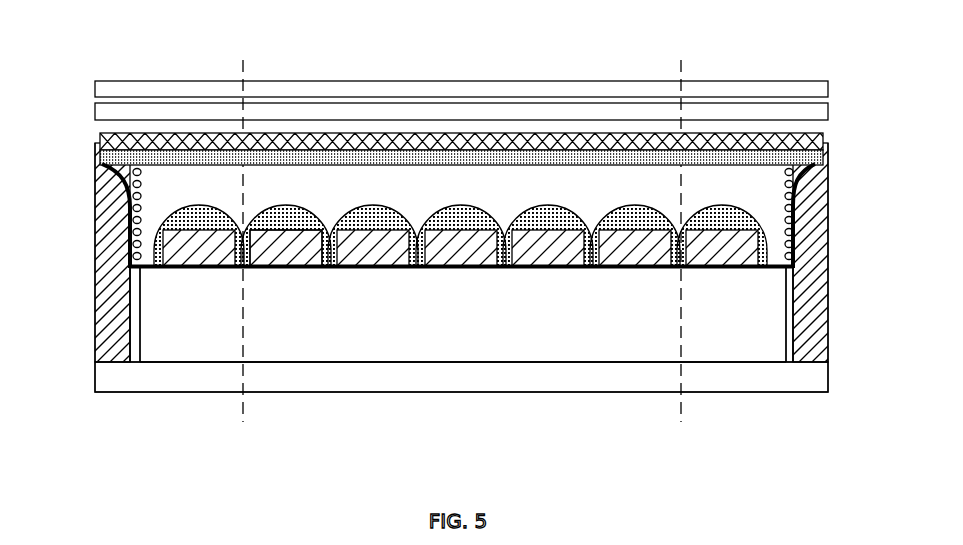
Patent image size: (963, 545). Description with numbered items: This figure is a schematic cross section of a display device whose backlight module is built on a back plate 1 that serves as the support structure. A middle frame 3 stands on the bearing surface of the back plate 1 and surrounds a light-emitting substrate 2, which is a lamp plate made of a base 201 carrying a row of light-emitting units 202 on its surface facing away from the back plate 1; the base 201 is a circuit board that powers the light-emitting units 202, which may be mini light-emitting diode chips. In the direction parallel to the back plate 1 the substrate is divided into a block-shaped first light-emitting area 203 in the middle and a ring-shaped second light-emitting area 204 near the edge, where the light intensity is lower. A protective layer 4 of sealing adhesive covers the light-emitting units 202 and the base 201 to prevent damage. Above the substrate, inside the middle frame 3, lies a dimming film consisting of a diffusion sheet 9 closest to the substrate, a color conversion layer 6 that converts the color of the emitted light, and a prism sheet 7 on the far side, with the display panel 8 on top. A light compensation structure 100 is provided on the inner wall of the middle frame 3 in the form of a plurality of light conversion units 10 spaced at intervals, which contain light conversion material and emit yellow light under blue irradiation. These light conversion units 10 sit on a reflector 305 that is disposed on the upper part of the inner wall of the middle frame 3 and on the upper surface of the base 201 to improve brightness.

The back plate 1 is at (578, 375).
The light-emitting substrate 2 is at (330, 438).
The base 201 is at (388, 327).
The light-emitting unit 202 is at (278, 255).
The first light-emitting area 203 is at (530, 363).
The second light-emitting area 204 is at (167, 365).
The middle frame 3 is at (817, 272).
The reflector 305 is at (130, 237).
The protective layer 4 is at (415, 268).
The color conversion layer 6 is at (102, 133).
The prism sheet 7 is at (393, 112).
The display panel 8 is at (513, 87).
The diffusion sheet 9 is at (772, 150).
The light conversion unit 10 is at (797, 203).
The light compensation structure 100 is at (136, 200).